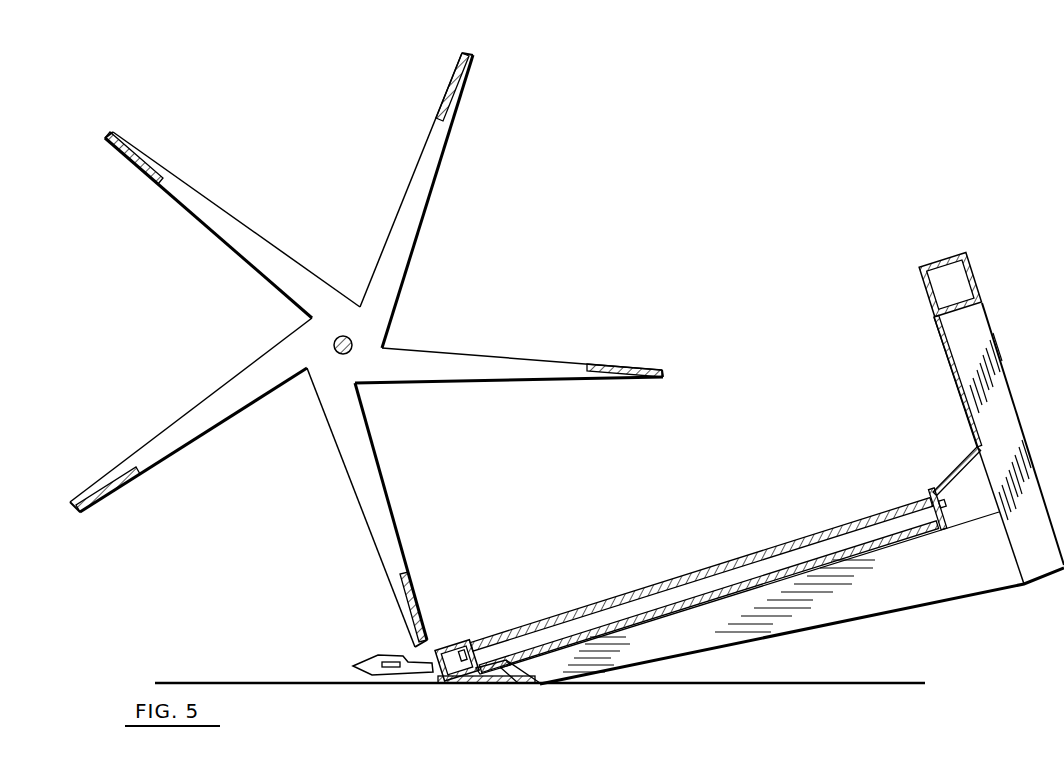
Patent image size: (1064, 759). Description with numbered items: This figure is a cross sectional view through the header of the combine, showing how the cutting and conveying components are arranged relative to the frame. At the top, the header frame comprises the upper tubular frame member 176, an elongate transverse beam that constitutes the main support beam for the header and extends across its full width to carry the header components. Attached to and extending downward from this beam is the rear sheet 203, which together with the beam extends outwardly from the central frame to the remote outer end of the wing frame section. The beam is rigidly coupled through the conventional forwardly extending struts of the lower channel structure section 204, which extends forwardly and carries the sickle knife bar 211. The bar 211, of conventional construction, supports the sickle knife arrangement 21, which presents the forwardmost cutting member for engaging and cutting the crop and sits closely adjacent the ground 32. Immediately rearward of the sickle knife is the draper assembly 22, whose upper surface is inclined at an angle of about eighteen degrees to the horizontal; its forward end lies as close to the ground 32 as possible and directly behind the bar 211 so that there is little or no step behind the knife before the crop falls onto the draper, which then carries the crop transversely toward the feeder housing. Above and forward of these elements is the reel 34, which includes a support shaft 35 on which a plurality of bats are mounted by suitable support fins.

The reel 34 is at (500, 196).
The support shaft 35 is at (334, 338).
The transverse upper beam 176 is at (976, 273).
The rear sheet 203 is at (962, 401).
The draper assembly 22 is at (737, 556).
The lower channel structure section 204 is at (839, 618).
The ground 32 is at (888, 683).
The sickle knife arrangement 21 is at (372, 652).
The sickle knife bar 211 is at (424, 657).